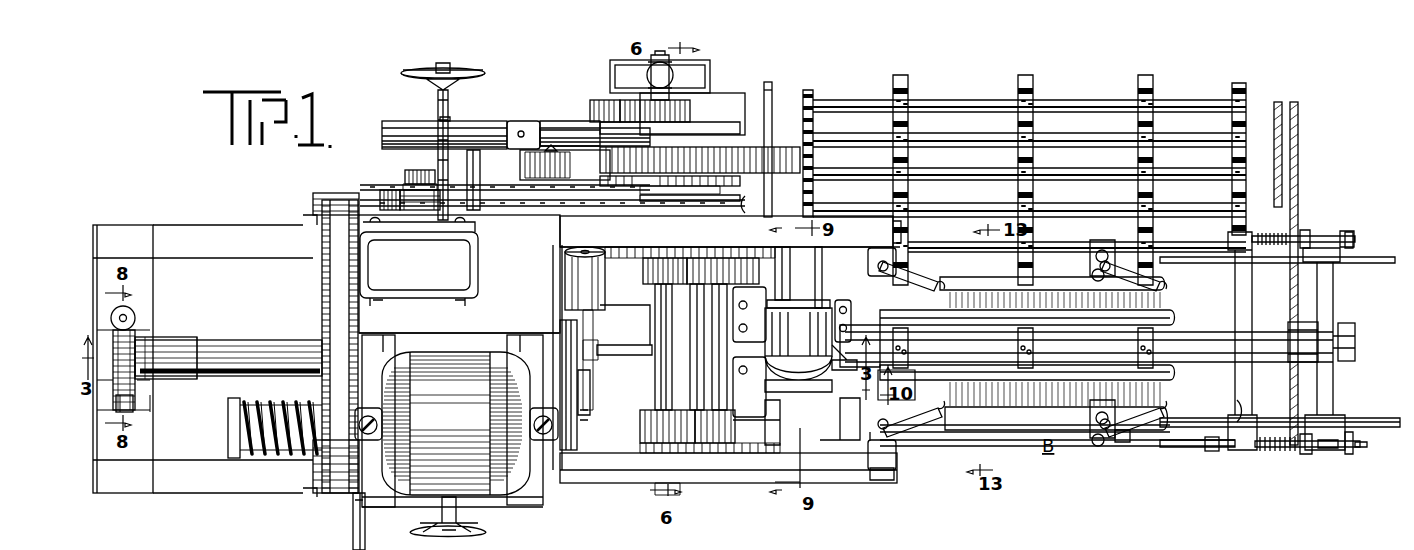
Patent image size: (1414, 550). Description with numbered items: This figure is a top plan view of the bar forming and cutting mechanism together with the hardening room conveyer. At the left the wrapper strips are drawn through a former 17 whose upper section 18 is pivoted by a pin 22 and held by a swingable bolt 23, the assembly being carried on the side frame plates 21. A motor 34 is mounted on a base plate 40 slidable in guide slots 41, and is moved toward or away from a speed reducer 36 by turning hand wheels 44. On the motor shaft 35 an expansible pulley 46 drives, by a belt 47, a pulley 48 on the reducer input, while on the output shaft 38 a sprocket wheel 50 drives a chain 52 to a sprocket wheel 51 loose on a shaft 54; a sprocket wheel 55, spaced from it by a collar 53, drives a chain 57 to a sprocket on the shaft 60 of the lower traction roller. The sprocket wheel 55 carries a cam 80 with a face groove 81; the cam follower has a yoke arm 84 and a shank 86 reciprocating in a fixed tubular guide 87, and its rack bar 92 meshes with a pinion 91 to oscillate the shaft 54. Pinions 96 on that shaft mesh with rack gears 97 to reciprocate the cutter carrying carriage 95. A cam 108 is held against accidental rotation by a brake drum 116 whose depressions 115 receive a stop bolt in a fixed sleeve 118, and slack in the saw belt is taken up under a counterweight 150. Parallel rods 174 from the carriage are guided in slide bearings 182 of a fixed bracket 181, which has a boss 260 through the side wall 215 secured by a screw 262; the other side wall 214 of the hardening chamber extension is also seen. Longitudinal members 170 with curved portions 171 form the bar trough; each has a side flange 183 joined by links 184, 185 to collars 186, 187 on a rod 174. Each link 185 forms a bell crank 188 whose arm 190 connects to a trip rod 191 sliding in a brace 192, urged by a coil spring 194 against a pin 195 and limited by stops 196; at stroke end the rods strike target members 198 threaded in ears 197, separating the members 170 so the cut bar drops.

The side frame plates 21 is at (201, 225).
The swingable bolt 23 is at (132, 312).
The former 17 is at (235, 332).
The upper section 18 is at (262, 348).
The pin 22 is at (134, 408).
The belt 47 is at (322, 268).
The pulley 48 is at (313, 204).
The expansible pulley 46 is at (326, 493).
The speed reducer 36 is at (456, 276).
The sprocket wheel 50 is at (408, 220).
The output shaft 38 is at (396, 193).
The shaft 60 is at (422, 170).
The chain 52 is at (540, 208).
The hand wheels 44 is at (410, 71).
The fixed tubular guide 87 is at (393, 121).
The shank 86 is at (513, 118).
The cam 80 is at (548, 120).
The yoke arm 84 is at (590, 130).
The rack bar 92 is at (600, 100).
The pinion 91 is at (690, 113).
The shaft 54 is at (685, 50).
The sprocket wheel 55 is at (722, 150).
The collar 53 is at (715, 189).
The chain 57 is at (628, 204).
The side wall 214 is at (772, 84).
The sprocket wheel 51 is at (718, 215).
The pinions 96 is at (663, 258).
The rack gears 97 is at (738, 258).
The counterweight 150 is at (565, 276).
The cutter carrying carriage 95 is at (720, 354).
The motor shaft 35 is at (583, 428).
The base plate 40 is at (402, 354).
The guide slots 41 is at (382, 522).
The motor 34 is at (472, 483).
The face groove 81 is at (749, 352).
The brake drum 116 is at (783, 420).
The depressions 115 is at (850, 440).
The cam 108 is at (826, 308).
The fixed sleeve 118 is at (866, 378).
The parallel rods 174 is at (1045, 262).
The transversely curved portions 171 is at (1170, 324).
The longitudinal members 170 is at (1171, 292).
The side flange 183 is at (1020, 440).
The link 184 is at (910, 263).
The link 185 is at (1135, 293).
The collar 186 is at (870, 250).
The collar 187 is at (1114, 253).
The arm 190 is at (1096, 252).
The bell cranks 188 is at (1142, 442).
The side wall 215 is at (1298, 146).
The fixed bracket 181 is at (1336, 287).
The pin 195 is at (1302, 235).
The ears 197 is at (1348, 233).
The slide bearings 182 is at (1338, 252).
The boss 260 is at (1318, 324).
The screw 262 is at (1358, 340).
The member 192 is at (1237, 407).
The trip rod 191 is at (1192, 451).
The stops 196 is at (1215, 453).
The coil spring 194 is at (1275, 455).
The target members 198 is at (1364, 448).